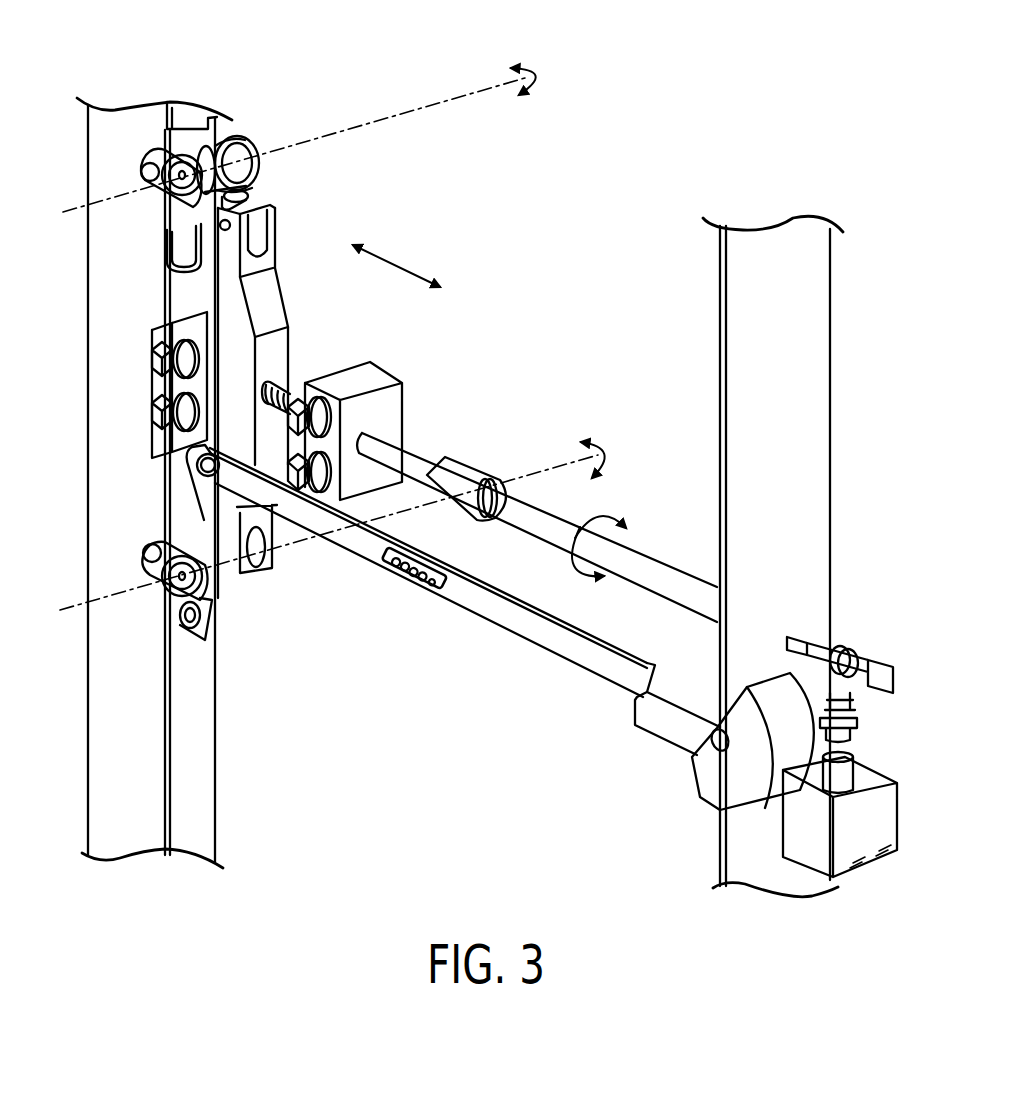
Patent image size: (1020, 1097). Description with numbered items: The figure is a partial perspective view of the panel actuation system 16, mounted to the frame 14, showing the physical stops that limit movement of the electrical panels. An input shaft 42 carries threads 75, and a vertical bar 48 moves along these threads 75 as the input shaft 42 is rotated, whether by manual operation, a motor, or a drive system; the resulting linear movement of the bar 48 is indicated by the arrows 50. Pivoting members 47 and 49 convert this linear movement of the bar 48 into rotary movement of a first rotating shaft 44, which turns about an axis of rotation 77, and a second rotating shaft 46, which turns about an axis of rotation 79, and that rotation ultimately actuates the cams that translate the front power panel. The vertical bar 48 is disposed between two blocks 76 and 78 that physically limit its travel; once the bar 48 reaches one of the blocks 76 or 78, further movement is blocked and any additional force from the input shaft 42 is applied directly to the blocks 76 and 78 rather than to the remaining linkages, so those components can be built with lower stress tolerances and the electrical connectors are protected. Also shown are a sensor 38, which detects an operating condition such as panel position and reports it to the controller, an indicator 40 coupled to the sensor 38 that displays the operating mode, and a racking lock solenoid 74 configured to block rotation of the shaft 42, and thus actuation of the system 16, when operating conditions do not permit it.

The frame 14 is at (198, 812).
The panel actuation system 16 is at (488, 240).
The sensor 38 is at (552, 633).
The indicator 40 is at (717, 787).
The input shaft 42 is at (675, 583).
The first rotating shaft 44 is at (222, 162).
The second rotating shaft 46 is at (198, 462).
The pivoting member 47 is at (157, 152).
The vertical bar 48 is at (263, 305).
The pivoting member 49 is at (242, 195).
The arrows 50 is at (400, 263).
The racking lock solenoid 74 is at (862, 813).
The threads 75 is at (273, 390).
The block 76 is at (197, 323).
The axis of rotation 77 is at (458, 97).
The block 78 is at (355, 380).
The axis of rotation 79 is at (532, 472).